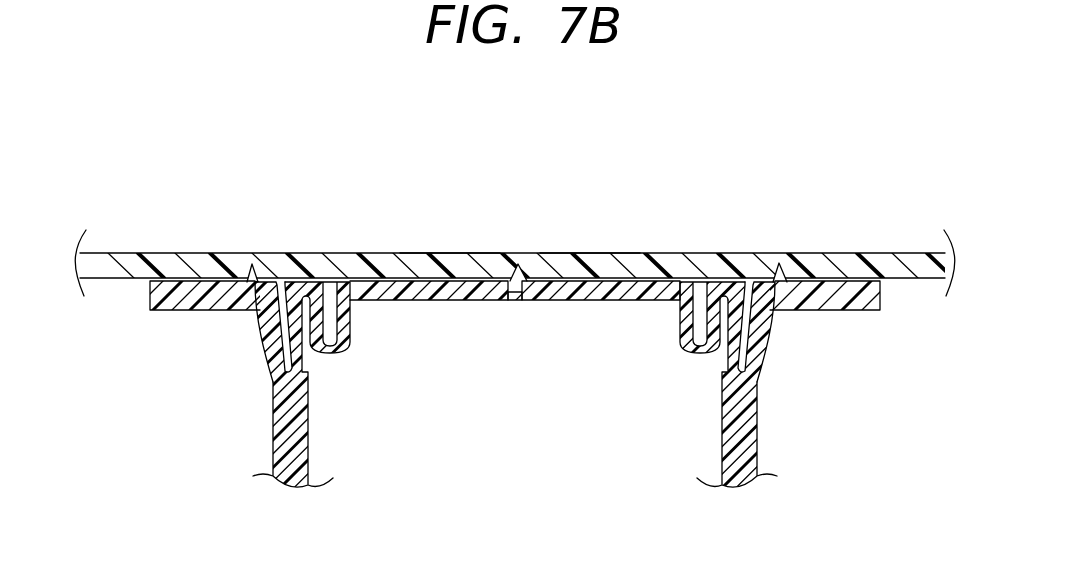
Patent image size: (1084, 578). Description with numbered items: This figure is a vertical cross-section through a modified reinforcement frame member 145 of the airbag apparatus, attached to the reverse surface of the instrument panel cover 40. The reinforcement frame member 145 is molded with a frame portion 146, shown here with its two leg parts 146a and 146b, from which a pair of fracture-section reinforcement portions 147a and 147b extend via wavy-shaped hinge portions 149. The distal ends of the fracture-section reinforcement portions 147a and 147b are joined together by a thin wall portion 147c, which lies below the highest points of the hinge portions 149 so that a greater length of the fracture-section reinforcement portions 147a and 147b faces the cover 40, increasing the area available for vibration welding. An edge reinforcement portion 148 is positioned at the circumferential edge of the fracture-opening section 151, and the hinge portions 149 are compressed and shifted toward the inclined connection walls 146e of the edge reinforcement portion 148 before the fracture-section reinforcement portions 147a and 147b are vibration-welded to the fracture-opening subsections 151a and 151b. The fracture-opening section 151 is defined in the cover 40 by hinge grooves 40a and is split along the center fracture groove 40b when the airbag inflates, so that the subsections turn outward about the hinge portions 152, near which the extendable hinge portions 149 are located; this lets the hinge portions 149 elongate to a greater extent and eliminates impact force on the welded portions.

The instrument panel cover 40 is at (115, 253).
The hinge grooves 40a is at (238, 279).
The center fracture groove 40b is at (526, 268).
The reinforcement frame member 145 is at (521, 353).
The frame portion 146 is at (521, 353).
The first leg of seal member 146a is at (302, 430).
The second leg of seal member 146b is at (747, 428).
The inclined connection walls 146e is at (268, 357).
The fracture-section reinforcement portion 147a is at (430, 302).
The fracture-section reinforcement portion 147b is at (570, 302).
The thin wall portion 147c is at (515, 300).
The edge reinforcement portion 148 is at (187, 312).
The hinge portions 149 is at (308, 284).
The bonding portion 151 is at (622, 145).
The fracture-opening subsection 151a is at (420, 253).
The fracture-opening subsection 151b is at (607, 253).
The hinge portions 152 is at (250, 276).